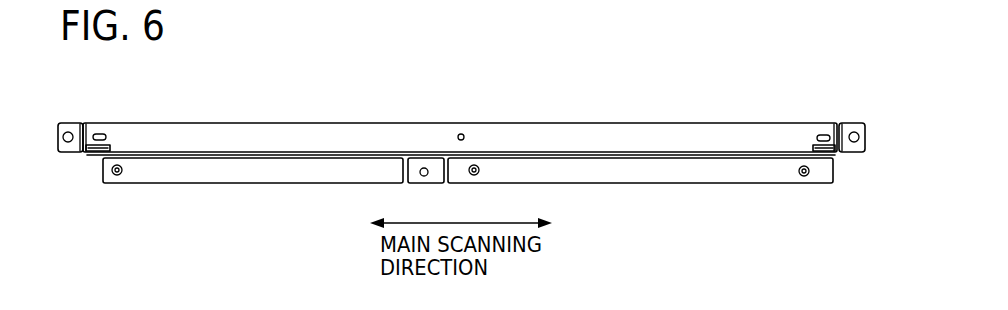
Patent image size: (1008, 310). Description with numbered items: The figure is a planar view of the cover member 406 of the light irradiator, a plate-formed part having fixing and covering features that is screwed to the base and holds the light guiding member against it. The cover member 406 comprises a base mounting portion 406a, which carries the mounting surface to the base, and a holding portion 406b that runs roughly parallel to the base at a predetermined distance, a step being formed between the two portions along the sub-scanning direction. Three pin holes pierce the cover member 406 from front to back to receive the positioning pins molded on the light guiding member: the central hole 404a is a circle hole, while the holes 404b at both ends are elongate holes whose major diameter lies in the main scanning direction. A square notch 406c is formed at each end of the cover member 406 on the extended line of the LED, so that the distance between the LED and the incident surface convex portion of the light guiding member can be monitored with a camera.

The cover member 406 is at (466, 140).
The base mounting portion 406a is at (310, 178).
The holding portion 406b is at (638, 130).
The notch 406c is at (98, 151).
The circle hole 404a is at (461, 133).
The elongate holes 404b is at (102, 133).